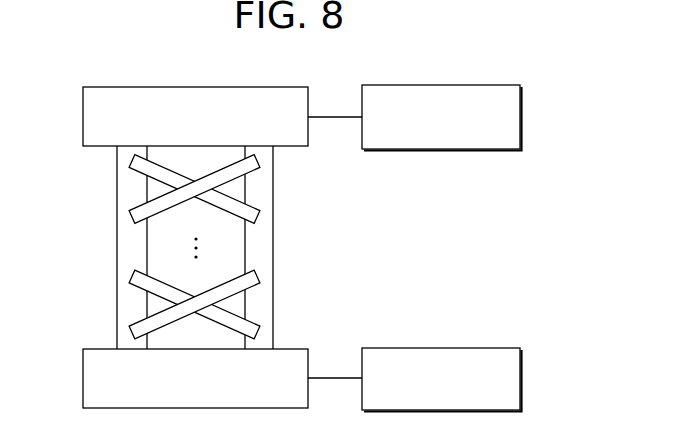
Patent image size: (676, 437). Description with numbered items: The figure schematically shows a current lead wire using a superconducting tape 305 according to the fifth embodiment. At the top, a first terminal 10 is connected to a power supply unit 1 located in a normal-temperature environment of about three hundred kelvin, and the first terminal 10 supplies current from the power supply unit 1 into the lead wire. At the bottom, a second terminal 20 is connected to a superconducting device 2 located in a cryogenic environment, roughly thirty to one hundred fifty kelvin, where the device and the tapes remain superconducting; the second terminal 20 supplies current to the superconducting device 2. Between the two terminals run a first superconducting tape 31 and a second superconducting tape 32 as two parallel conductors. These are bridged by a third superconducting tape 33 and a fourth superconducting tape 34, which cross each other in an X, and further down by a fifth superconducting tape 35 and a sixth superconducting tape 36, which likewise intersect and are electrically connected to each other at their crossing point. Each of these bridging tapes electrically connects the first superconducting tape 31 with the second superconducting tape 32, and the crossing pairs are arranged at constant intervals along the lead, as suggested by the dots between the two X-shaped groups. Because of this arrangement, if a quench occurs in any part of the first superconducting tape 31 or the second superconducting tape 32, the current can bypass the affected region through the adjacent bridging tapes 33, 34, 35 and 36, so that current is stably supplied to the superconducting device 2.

The power supply unit 1 is at (520, 85).
The superconducting device 2 is at (520, 348).
The first terminal 10 is at (83, 87).
The second terminal 20 is at (83, 349).
The first superconducting tape 31 is at (123, 188).
The second superconducting tape 32 is at (267, 247).
The third superconducting tape 33 is at (254, 159).
The fourth superconducting tape 34 is at (256, 215).
The fifth superconducting tape 35 is at (254, 275).
The sixth superconducting tape 36 is at (256, 330).
The current lead wire using a superconducting tape 305 is at (87, 243).